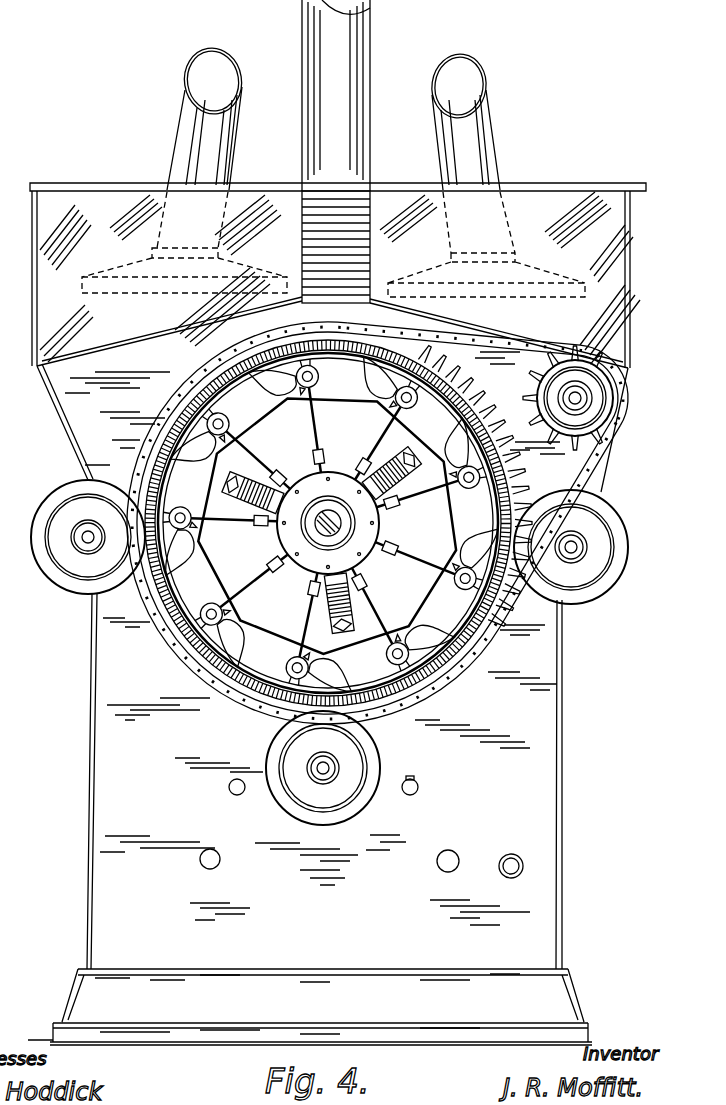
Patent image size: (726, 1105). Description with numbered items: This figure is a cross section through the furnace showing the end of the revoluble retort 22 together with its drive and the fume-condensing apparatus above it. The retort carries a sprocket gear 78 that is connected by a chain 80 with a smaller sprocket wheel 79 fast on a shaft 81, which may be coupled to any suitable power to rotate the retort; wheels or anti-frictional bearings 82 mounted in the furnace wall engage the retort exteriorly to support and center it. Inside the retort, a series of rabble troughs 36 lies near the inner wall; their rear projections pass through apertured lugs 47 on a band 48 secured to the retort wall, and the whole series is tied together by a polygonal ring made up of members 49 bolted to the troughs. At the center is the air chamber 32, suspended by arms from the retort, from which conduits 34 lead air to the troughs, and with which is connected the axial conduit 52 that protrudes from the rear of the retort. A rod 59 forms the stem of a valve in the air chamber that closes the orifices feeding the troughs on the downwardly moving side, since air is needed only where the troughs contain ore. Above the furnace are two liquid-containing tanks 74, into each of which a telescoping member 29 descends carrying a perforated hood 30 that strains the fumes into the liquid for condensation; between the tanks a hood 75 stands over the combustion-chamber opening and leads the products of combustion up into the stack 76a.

The revoluble retort 22 is at (480, 392).
The telescoping member 29 is at (180, 140).
The hood 30 is at (120, 267).
The air chamber 32 is at (328, 523).
The conduits 34 is at (243, 533).
The rabble troughs 36 is at (270, 392).
The apertured lugs 47 is at (193, 505).
The band 48 is at (437, 405).
The ring members 49 is at (343, 403).
The conduit 52 is at (315, 505).
The rod 59 is at (317, 542).
The liquid-containing tanks 74 is at (338, 337).
The hood 75 is at (370, 183).
The stack 76a is at (312, 98).
The sprocket gear 78 is at (523, 477).
The sprocket wheel 79 is at (614, 382).
The chain 80 is at (597, 467).
The shaft 81 is at (577, 400).
The anti-frictional bearings 82 is at (78, 567).